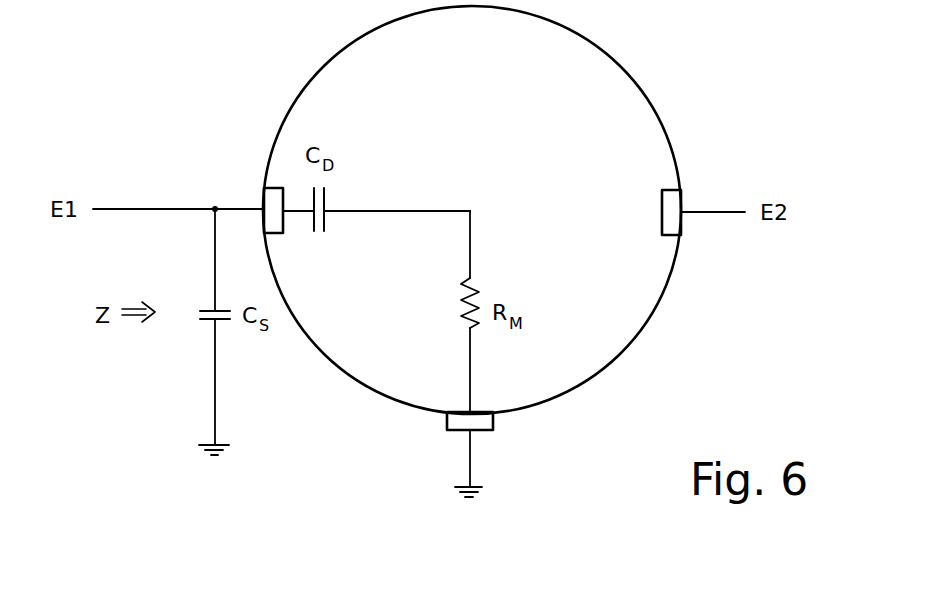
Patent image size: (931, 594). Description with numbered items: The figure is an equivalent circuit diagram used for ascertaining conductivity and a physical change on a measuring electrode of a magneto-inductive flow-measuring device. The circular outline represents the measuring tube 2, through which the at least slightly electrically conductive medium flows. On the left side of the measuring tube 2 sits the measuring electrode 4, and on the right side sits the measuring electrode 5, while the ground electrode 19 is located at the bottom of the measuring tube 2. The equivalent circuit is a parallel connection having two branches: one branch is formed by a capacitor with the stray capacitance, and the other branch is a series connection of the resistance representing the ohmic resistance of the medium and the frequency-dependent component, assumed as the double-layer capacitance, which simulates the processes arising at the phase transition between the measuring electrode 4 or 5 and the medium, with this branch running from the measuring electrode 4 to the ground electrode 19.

The measuring tube 2 is at (635, 342).
The measuring electrode 4 is at (272, 203).
The measuring electrode 5 is at (672, 200).
The ground electrode 19 is at (483, 418).